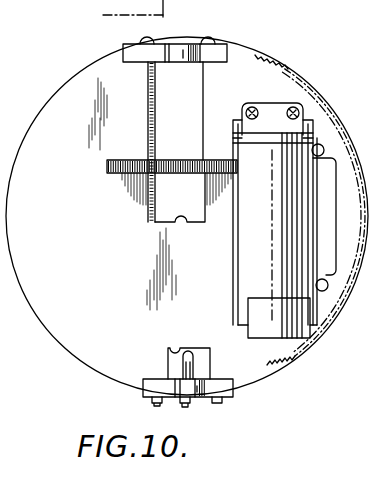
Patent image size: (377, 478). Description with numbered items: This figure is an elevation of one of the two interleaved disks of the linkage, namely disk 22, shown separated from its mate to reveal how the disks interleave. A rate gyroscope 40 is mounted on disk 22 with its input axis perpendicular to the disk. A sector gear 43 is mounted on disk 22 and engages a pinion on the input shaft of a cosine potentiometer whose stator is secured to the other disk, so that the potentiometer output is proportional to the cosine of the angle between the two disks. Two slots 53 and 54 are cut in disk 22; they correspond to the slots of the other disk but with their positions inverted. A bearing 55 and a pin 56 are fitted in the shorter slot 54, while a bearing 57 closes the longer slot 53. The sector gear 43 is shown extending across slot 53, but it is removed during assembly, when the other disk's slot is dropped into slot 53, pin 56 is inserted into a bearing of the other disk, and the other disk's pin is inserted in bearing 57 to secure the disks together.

The disk 22 is at (82, 256).
The rate gyroscope 40 is at (272, 226).
The sector gear 43 is at (172, 160).
The slot 53 is at (183, 224).
The slot 54 is at (174, 347).
The bearing 55 is at (213, 398).
The pin 56 is at (195, 364).
The bearing 57 is at (181, 44).